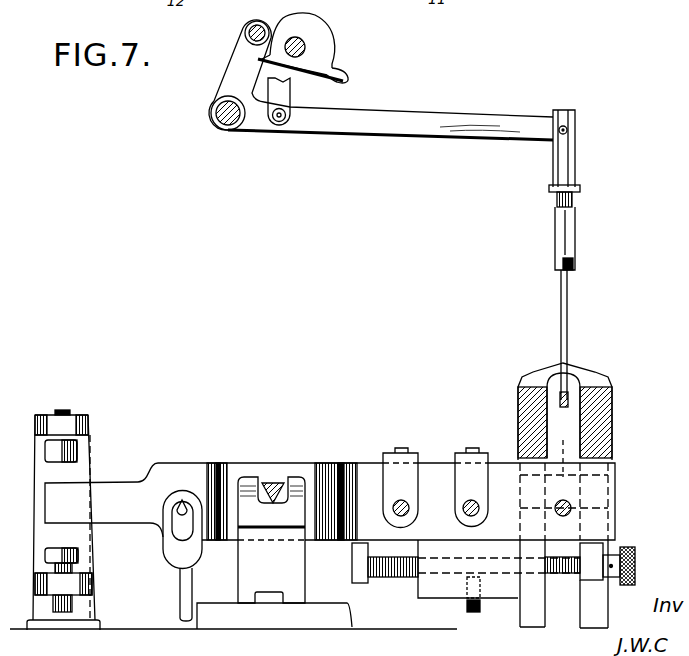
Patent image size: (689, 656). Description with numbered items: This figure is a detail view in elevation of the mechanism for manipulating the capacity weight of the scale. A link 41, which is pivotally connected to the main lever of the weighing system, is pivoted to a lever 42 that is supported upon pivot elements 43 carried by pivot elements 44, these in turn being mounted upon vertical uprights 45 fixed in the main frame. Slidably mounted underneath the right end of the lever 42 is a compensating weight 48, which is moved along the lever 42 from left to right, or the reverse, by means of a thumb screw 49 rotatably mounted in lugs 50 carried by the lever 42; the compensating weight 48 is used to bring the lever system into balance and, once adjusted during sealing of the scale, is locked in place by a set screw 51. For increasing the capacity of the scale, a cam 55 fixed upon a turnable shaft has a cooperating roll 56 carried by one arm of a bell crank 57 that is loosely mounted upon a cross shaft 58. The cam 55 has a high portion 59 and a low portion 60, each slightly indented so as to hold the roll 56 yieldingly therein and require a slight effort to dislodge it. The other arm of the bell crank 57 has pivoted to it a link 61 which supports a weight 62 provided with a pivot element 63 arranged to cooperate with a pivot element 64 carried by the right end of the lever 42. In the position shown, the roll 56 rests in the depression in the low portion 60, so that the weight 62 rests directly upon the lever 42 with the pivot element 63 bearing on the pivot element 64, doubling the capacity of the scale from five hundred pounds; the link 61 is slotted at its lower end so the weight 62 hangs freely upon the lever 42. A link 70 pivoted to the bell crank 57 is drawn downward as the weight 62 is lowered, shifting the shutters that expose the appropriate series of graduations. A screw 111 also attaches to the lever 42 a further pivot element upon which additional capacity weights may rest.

The link 41 is at (180, 600).
The lever 42 is at (343, 467).
The pivot elements 43 is at (272, 480).
The pivot elements 44 is at (273, 507).
The vertical uprights 45 is at (252, 575).
The compensating weight 48 is at (500, 598).
The thumb screw 49 is at (628, 552).
The lugs 50 is at (365, 582).
The set screw 51 is at (467, 607).
The cam 55 is at (310, 26).
The roll 56 is at (251, 26).
The bell crank 57 is at (357, 130).
The cross shaft 58 is at (227, 124).
The high portion 59 is at (348, 70).
The low portion 60 is at (262, 52).
The link 61 is at (562, 300).
The weight 62 is at (612, 430).
The pivot element 63 is at (564, 450).
The pivot element 64 is at (571, 516).
The link 70 is at (291, 93).
The screw 111 is at (405, 450).